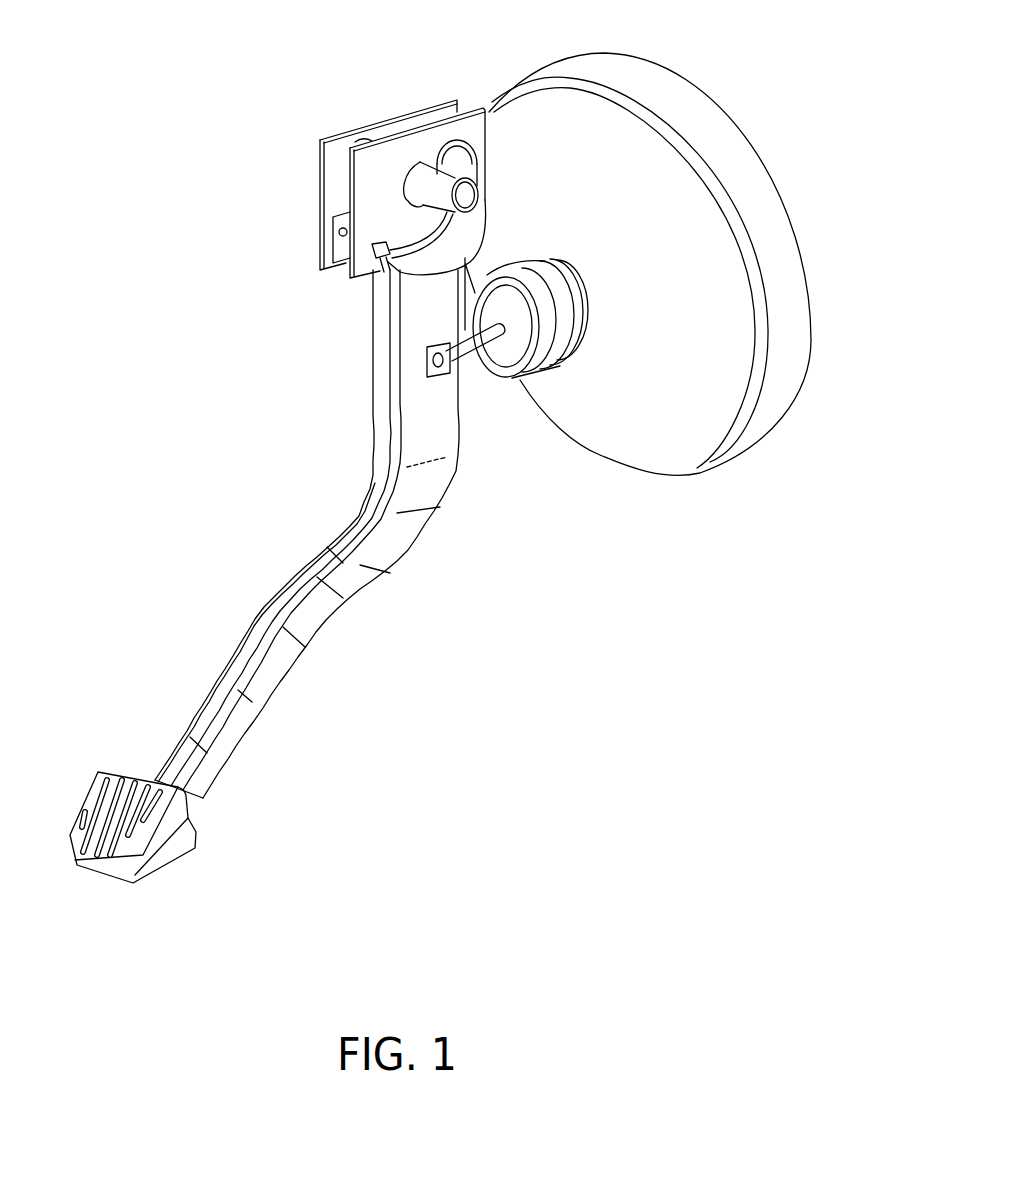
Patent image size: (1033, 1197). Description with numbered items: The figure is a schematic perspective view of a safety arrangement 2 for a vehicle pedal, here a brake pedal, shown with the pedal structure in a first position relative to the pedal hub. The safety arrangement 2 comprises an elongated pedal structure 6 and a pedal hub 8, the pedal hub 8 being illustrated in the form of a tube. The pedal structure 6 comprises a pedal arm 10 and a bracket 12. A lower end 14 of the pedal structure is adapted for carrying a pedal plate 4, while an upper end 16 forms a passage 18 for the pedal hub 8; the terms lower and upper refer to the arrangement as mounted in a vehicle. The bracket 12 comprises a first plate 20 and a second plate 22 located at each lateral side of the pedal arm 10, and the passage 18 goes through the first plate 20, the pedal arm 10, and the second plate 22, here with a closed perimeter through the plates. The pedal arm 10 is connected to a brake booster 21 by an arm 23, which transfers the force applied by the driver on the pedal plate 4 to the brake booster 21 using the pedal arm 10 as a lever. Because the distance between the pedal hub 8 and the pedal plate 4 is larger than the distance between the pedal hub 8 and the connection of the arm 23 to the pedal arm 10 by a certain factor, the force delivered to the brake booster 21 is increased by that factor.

The safety arrangement 2 is at (200, 305).
The pedal plate 4 is at (138, 817).
The pedal structure 6 is at (230, 368).
The pedal hub 8 is at (442, 180).
The pedal arm 10 is at (407, 537).
The bracket 12 is at (398, 88).
The lower end 14 is at (230, 815).
The upper end 16 is at (308, 167).
The passage 18 is at (462, 150).
The first plate 20 is at (392, 213).
The brake booster 21 is at (658, 255).
The second plate 22 is at (385, 133).
The arm 23 is at (480, 348).